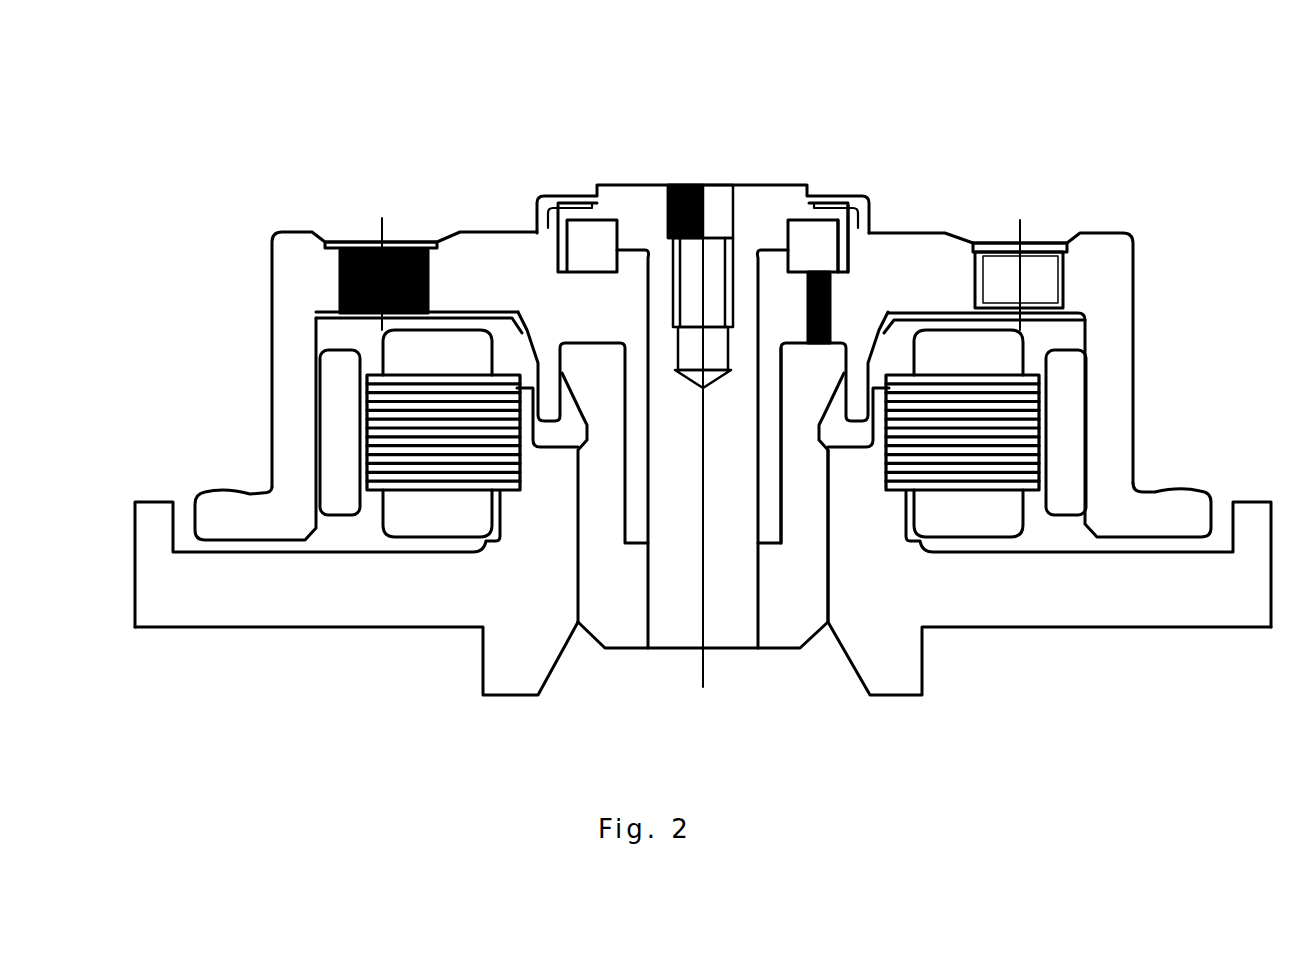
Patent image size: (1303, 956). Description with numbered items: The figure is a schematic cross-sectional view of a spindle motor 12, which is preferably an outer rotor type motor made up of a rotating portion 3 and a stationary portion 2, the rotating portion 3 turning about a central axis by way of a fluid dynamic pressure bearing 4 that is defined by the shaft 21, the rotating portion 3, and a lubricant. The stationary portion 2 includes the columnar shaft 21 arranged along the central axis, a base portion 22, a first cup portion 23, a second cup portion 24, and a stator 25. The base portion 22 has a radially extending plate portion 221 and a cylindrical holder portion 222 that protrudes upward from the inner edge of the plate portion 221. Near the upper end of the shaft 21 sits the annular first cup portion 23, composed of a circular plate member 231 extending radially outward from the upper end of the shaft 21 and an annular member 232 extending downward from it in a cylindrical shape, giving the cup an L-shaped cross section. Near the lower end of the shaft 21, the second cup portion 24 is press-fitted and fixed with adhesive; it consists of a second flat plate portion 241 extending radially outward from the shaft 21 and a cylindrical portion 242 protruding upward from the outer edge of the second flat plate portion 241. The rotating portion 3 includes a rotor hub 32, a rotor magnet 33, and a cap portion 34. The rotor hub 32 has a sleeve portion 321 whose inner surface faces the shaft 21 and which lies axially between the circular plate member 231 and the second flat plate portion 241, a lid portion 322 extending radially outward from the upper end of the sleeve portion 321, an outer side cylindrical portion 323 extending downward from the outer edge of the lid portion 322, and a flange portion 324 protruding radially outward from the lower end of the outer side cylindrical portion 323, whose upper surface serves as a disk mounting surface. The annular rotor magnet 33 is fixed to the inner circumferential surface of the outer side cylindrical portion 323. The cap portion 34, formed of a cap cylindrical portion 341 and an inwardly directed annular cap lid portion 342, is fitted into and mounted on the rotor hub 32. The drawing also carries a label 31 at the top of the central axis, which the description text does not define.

The motor 12 is at (228, 54).
The fluid dynamic pressure bearing 4 is at (286, 116).
The rotating portion 3 is at (1090, 66).
The rotor hub 32 is at (1025, 136).
The lid portion 322 is at (927, 253).
The sleeve portion 321 is at (777, 303).
The cap portion 34 is at (958, 85).
The cap cylindrical portion 341 is at (867, 220).
The cap lid portion 342 is at (843, 203).
The first cup portion 23 is at (622, 100).
The circular plate member 231 is at (625, 203).
The annular member 232 is at (577, 247).
The bolt 31 is at (703, 185).
The rotor magnet 33 is at (337, 432).
The outer side cylindrical portion 323 is at (293, 417).
The flange portion 324 is at (213, 512).
The stator 25 is at (420, 457).
The stationary portion 2 is at (590, 712).
The shaft 21 is at (668, 632).
The base portion 22 is at (1018, 712).
The plate portion 221 is at (1007, 607).
The holder portion 222 is at (870, 540).
The second cup portion 24 is at (851, 727).
The second flat plate portion 241 is at (780, 607).
The cylindrical portion 242 is at (813, 503).